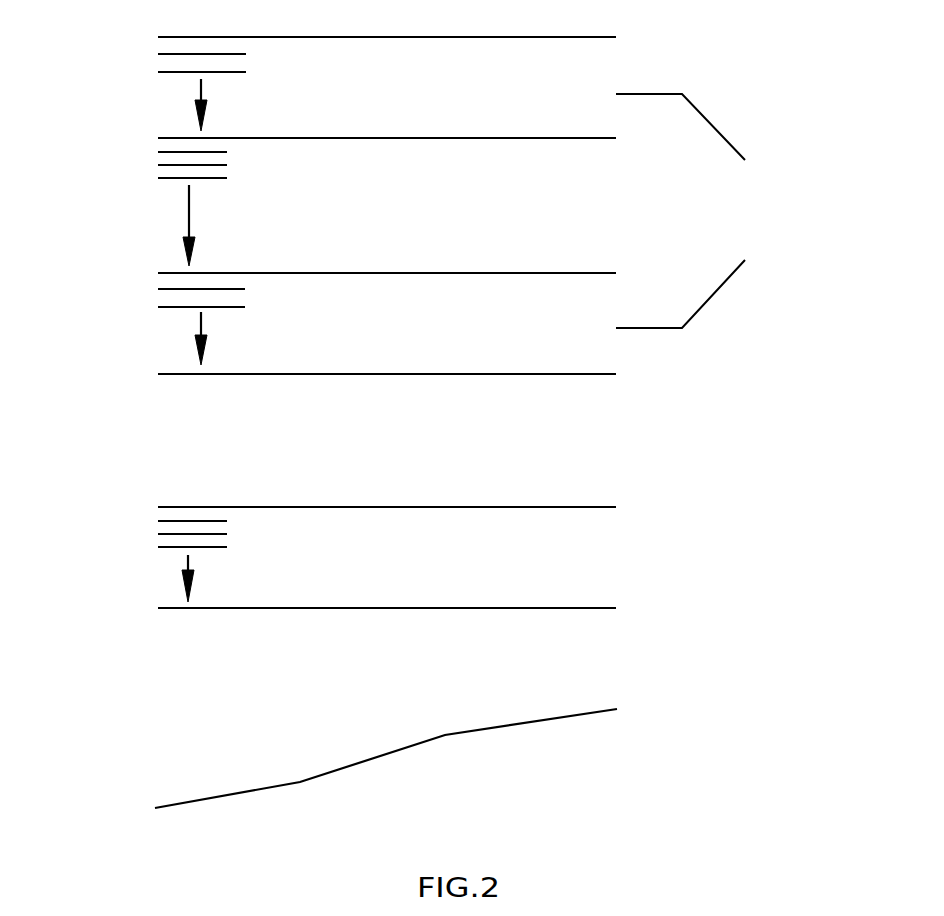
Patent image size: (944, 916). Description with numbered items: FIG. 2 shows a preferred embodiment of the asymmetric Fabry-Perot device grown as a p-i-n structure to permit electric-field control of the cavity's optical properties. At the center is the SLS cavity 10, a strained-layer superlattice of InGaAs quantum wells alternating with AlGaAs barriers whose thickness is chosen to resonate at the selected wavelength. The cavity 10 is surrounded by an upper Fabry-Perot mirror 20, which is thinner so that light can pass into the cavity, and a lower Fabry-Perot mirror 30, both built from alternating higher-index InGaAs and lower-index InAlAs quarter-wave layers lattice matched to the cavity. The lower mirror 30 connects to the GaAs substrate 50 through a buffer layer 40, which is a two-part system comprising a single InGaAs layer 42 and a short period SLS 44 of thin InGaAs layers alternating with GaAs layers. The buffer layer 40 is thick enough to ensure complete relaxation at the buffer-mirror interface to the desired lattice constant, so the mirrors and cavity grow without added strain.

The SLS cavity 10 is at (142, 200).
The upper Fabry-Perot mirror 20 is at (633, 77).
The lower Fabry-Perot mirror 30 is at (633, 362).
The buffer layer 40 is at (795, 442).
The InGaAs layer 42 is at (634, 445).
The short period SLS 44 is at (634, 563).
The substrate 50 is at (633, 661).